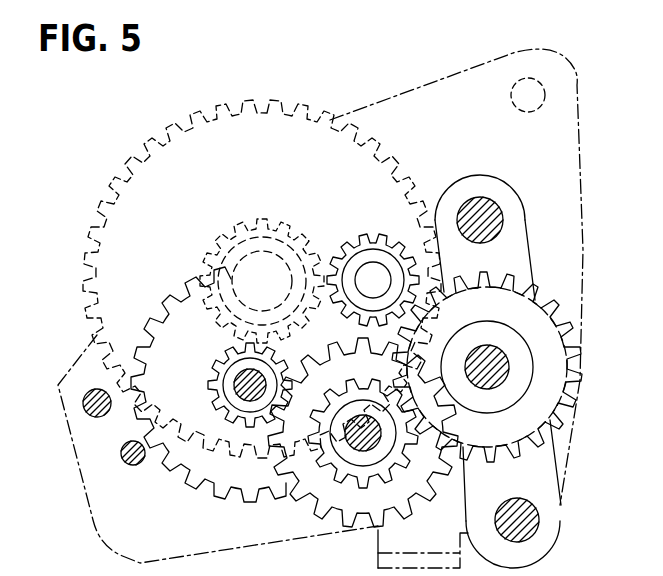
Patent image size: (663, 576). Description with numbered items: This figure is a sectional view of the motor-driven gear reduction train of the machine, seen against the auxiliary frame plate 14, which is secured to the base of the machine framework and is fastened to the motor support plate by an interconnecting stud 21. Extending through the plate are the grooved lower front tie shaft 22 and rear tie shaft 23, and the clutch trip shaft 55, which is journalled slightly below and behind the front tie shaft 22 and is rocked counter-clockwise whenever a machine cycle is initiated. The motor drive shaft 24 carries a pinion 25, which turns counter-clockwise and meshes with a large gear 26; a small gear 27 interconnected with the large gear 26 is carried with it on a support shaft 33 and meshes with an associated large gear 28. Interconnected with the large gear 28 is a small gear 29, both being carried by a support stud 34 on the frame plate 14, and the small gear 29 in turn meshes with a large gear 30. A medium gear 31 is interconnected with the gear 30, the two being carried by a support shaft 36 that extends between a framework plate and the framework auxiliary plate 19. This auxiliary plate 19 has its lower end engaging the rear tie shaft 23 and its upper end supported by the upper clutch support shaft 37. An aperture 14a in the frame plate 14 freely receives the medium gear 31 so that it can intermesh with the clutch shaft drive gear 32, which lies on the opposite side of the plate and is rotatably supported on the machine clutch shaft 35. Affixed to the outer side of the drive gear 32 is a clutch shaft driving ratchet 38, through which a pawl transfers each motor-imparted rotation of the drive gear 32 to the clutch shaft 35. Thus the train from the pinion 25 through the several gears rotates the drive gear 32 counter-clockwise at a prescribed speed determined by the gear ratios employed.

The auxiliary frame plate 14 is at (400, 108).
The aperture 14a is at (570, 300).
The framework auxiliary plate 19 is at (526, 228).
The interconnecting stud 21 is at (520, 90).
The front tie shaft 22 is at (83, 400).
The rear tie shaft 23 is at (512, 507).
The motor drive shaft 24 is at (362, 270).
The pinion 25 is at (362, 250).
The large gear 26 is at (160, 318).
The small gear 27 is at (236, 352).
The large gear 28 is at (317, 490).
The small gear 29 is at (378, 488).
The large gear 30 is at (520, 290).
The medium gear 31 is at (537, 343).
The clutch shaft drive gear 32 is at (126, 163).
The support shaft 33 is at (243, 382).
The support stud 34 is at (368, 413).
The machine clutch shaft 35 is at (262, 258).
The support shaft 36 is at (510, 366).
The upper clutch support shaft 37 is at (462, 212).
The clutch shaft driving ratchet 38 is at (227, 234).
The clutch trip shaft 55 is at (121, 455).